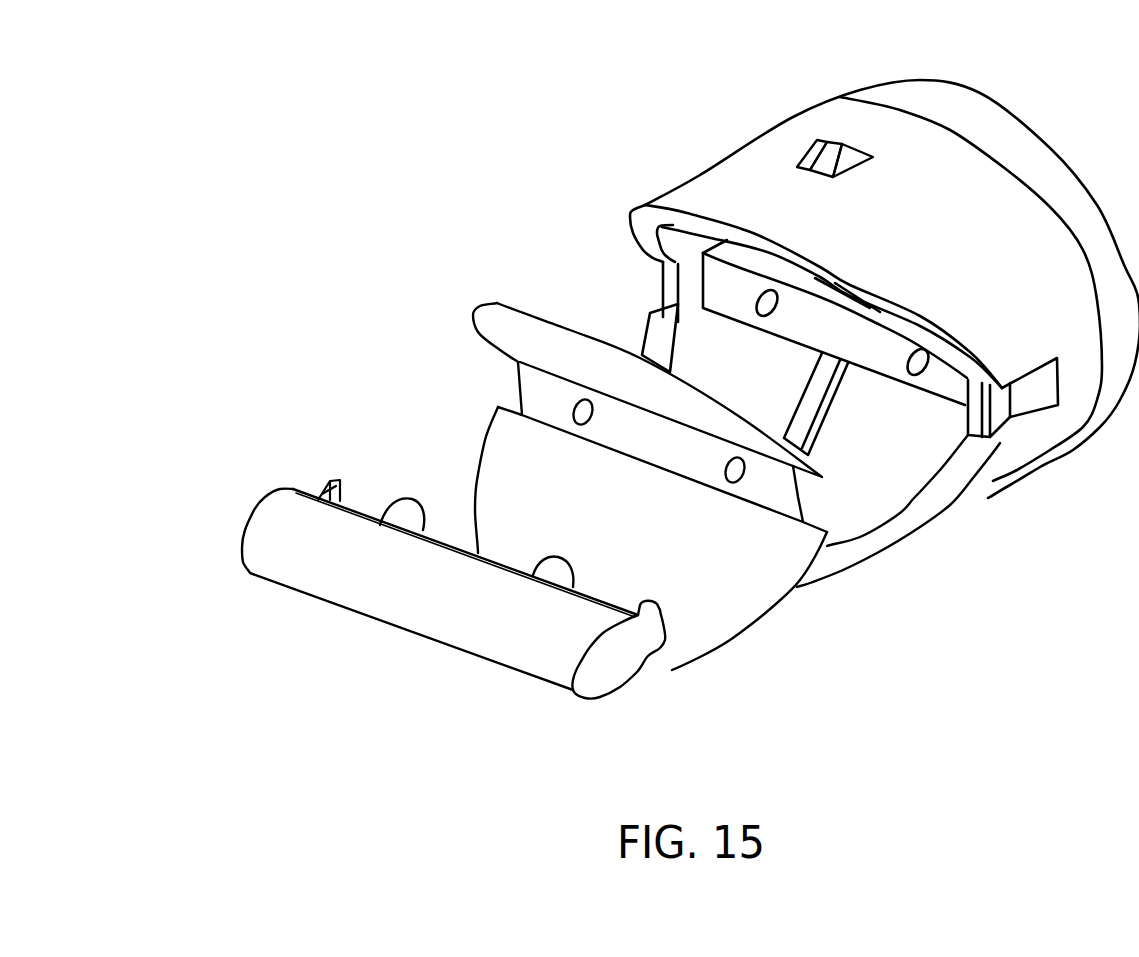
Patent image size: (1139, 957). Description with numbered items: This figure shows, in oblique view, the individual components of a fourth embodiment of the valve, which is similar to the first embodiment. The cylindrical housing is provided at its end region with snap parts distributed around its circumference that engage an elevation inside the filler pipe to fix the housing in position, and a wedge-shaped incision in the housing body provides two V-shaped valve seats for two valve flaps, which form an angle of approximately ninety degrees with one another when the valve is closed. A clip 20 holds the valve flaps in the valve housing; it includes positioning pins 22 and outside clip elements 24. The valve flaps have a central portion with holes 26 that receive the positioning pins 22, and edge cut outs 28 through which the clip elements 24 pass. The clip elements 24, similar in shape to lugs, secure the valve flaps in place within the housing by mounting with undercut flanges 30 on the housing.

The clip 20 is at (293, 550).
The positioning pin 22 is at (558, 573).
The clip element 24 is at (330, 484).
The hole 26 is at (580, 408).
The edge cut out 28 is at (798, 497).
The undercut flange 30 is at (650, 603).